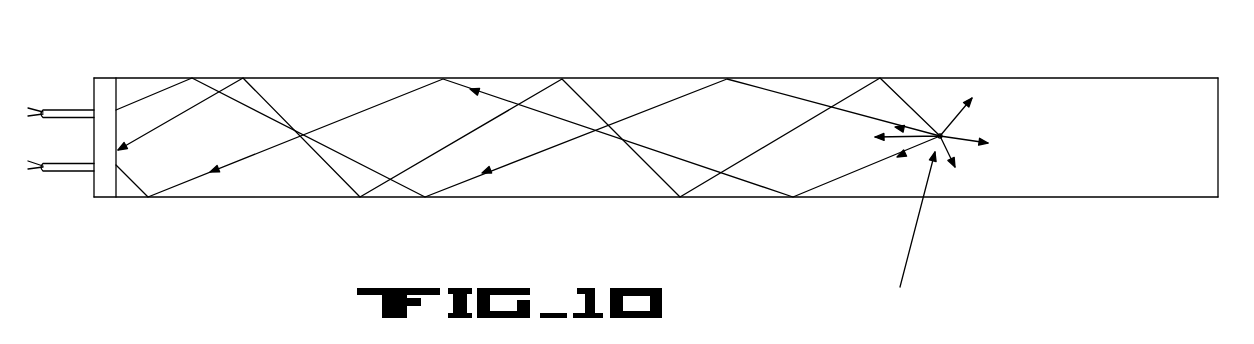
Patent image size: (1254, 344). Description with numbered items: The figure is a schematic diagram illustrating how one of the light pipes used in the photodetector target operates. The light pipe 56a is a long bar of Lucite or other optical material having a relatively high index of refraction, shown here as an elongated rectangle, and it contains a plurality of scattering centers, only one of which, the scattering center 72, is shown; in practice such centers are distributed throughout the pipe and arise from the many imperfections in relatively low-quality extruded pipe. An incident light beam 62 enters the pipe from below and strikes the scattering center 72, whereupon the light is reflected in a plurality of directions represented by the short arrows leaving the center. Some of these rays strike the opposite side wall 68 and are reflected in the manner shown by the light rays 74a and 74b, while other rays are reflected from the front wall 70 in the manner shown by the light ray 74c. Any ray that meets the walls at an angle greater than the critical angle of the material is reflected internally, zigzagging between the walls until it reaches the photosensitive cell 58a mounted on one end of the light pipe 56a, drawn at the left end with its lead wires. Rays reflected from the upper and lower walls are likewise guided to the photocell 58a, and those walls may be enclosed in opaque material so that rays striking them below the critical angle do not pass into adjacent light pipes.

The light pipe 56a is at (1127, 77).
The photosensitive cell 58a is at (104, 74).
The incident light beam 62 is at (915, 230).
The opposite side wall 68 is at (656, 77).
The front wall 70 is at (713, 200).
The scattering center 72 is at (945, 131).
The light ray 74a is at (897, 93).
The light ray 74b is at (767, 89).
The light ray 74c is at (826, 186).